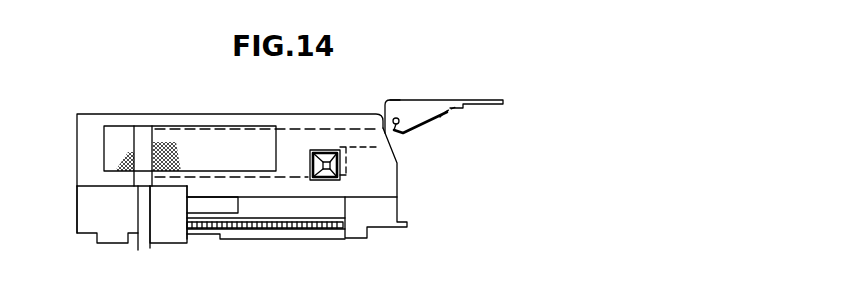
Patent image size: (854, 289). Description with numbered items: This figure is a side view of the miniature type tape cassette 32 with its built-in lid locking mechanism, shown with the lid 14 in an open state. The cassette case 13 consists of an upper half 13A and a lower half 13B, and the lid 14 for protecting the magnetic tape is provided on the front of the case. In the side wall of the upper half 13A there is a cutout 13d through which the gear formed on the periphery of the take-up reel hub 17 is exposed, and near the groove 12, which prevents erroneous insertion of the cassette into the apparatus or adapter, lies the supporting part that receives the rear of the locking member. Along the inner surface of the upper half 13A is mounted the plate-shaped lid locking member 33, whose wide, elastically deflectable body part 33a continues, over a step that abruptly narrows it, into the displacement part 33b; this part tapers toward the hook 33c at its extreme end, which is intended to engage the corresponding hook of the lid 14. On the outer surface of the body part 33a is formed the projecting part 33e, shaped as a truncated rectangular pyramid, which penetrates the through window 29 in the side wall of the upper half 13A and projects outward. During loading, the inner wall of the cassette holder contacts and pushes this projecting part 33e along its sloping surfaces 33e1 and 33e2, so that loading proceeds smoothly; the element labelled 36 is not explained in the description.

The cassette case 13 is at (210, 163).
The upper half 13A is at (88, 158).
The lower half 13B is at (88, 208).
The cutout 13d is at (252, 198).
The groove 12 is at (143, 238).
The take-up reel hub 17 is at (207, 228).
The lid locking member 33 is at (279, 178).
The body part 33a is at (246, 128).
The displacement part 33b is at (388, 137).
The hook 33c is at (409, 135).
The projecting part 33e is at (326, 177).
The sloping surface 33e1 is at (324, 153).
The sloping surface 33e2 is at (350, 180).
The through window 29 is at (312, 150).
The miniature type tape cassette 32 is at (418, 80).
The lid 14 is at (463, 101).
The hook 36 is at (452, 116).